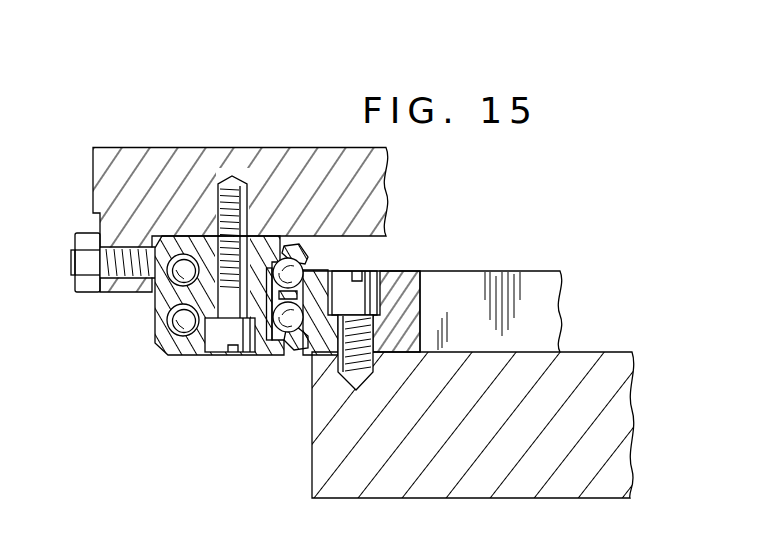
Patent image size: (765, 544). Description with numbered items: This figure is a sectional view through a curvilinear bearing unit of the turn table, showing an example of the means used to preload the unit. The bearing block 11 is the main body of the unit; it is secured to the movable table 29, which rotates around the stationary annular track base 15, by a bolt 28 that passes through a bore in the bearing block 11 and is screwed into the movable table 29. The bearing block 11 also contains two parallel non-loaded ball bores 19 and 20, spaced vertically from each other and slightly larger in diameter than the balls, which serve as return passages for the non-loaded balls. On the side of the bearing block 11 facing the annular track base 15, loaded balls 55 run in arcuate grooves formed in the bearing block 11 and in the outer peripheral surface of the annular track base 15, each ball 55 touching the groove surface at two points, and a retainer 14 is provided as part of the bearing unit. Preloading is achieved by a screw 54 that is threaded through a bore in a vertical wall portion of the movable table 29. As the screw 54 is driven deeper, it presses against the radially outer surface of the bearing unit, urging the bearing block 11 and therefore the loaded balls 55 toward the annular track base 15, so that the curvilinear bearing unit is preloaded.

The movable table 29 is at (280, 158).
The screw 54 is at (94, 292).
The bearing block 11 is at (183, 357).
The non-loaded ball bore 19 is at (168, 286).
The non-loaded ball bore 20 is at (158, 347).
The bolt 28 is at (239, 356).
The retainer 14 is at (305, 353).
The ball 55 is at (309, 257).
The annular track base 15 is at (398, 280).